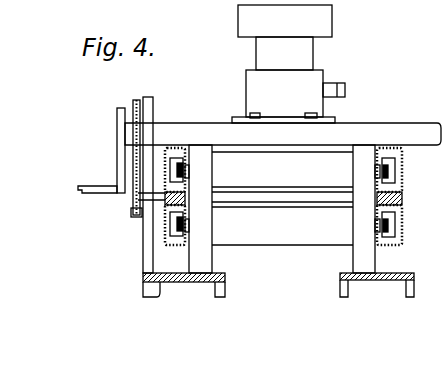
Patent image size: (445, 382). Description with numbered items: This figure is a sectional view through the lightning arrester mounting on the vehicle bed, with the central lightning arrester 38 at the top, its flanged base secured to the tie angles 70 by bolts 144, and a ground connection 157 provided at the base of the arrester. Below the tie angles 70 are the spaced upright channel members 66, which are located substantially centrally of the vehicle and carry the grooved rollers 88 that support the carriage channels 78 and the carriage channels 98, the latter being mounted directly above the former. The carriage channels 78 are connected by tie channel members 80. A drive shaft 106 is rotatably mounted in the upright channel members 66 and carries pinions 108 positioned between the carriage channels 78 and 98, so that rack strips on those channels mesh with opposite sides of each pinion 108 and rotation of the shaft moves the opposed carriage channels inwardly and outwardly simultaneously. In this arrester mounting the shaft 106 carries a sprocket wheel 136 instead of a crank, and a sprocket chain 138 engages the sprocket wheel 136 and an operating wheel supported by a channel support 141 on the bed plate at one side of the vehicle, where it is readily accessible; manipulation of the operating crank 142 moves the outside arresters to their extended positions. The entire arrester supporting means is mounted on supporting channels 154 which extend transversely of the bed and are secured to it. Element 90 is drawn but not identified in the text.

The lightning arrester 38 is at (319, 16).
The ground connection 157 is at (334, 91).
The bolts 144 is at (313, 113).
The tie angles 70 is at (419, 126).
The tie channel members 80 is at (217, 127).
The upright channel members 66 is at (205, 262).
The supporting channels 154 is at (225, 286).
The channel support 141 is at (147, 257).
The sprocket chain 138 is at (132, 158).
The operating crank 142 is at (78, 188).
The sprocket wheel 136 is at (133, 202).
The drive shaft 106 is at (287, 186).
The bearing assembly 90 is at (377, 158).
The carriage channels 98 is at (403, 168).
The grooved rollers 88 is at (402, 178).
The pinions 108 is at (402, 198).
The carriage channels 78 is at (402, 230).